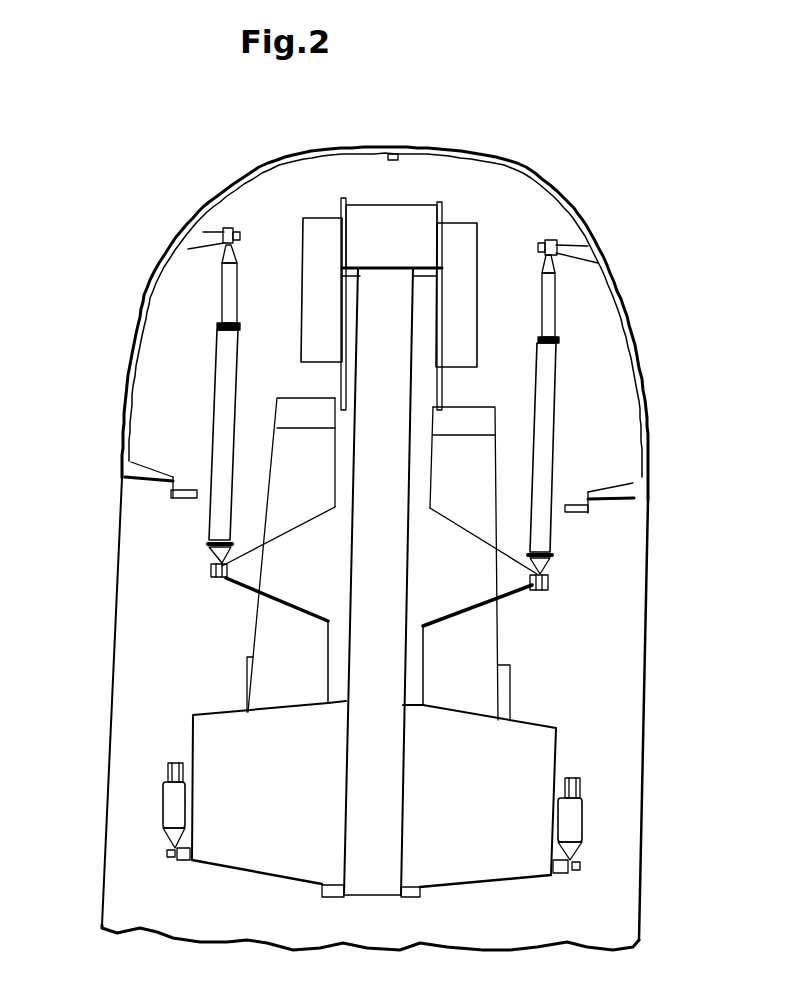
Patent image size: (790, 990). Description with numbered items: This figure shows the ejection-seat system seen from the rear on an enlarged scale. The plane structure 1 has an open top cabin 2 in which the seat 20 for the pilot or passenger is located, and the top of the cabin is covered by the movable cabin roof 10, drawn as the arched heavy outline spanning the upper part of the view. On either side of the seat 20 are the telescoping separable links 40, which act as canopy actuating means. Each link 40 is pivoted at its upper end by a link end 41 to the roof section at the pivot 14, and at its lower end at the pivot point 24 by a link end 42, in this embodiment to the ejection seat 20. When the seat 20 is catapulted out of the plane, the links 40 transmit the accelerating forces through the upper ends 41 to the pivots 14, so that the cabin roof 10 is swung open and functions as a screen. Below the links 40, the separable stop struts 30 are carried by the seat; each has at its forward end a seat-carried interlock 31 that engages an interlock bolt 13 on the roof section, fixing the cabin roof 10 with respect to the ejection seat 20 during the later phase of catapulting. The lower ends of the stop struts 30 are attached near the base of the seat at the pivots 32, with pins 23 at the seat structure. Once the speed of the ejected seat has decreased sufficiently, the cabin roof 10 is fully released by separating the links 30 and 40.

The plane structure 1 is at (648, 680).
The open top cabin 2 is at (357, 182).
The cabin roof 10 is at (650, 415).
The interlock bolt 13 is at (172, 495).
The pivot 14 is at (208, 235).
The seat 20 is at (408, 235).
The lower pivot pin 23 is at (180, 860).
The lower end pivot 24 is at (214, 568).
The separable stop strut 30 is at (168, 810).
The interlock 31 is at (168, 763).
The lower pivot of lower cylinder 32 is at (168, 850).
The telescoping separable links 40 is at (222, 438).
The link ends 41 is at (225, 228).
The link ends 42 is at (218, 577).